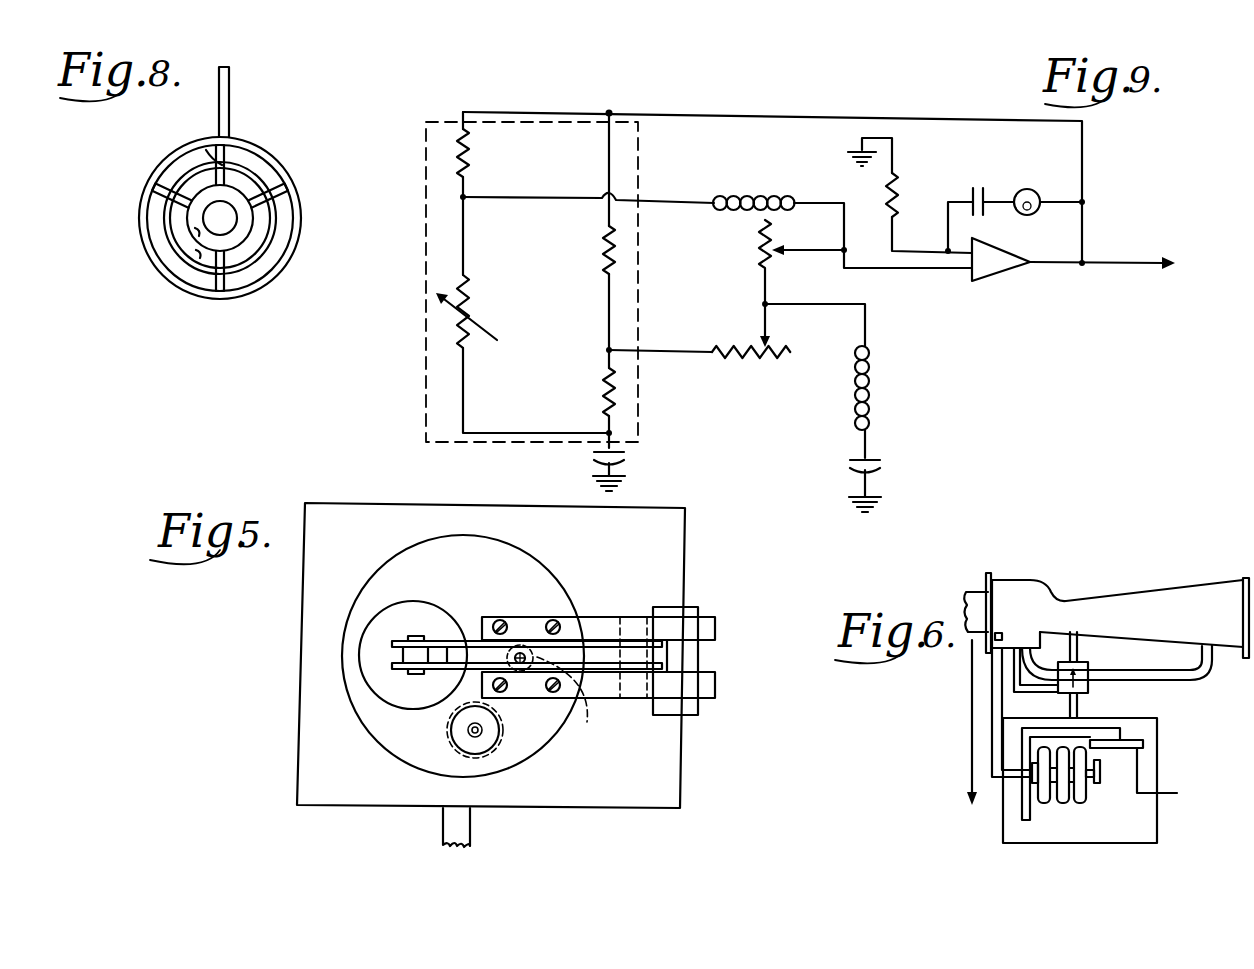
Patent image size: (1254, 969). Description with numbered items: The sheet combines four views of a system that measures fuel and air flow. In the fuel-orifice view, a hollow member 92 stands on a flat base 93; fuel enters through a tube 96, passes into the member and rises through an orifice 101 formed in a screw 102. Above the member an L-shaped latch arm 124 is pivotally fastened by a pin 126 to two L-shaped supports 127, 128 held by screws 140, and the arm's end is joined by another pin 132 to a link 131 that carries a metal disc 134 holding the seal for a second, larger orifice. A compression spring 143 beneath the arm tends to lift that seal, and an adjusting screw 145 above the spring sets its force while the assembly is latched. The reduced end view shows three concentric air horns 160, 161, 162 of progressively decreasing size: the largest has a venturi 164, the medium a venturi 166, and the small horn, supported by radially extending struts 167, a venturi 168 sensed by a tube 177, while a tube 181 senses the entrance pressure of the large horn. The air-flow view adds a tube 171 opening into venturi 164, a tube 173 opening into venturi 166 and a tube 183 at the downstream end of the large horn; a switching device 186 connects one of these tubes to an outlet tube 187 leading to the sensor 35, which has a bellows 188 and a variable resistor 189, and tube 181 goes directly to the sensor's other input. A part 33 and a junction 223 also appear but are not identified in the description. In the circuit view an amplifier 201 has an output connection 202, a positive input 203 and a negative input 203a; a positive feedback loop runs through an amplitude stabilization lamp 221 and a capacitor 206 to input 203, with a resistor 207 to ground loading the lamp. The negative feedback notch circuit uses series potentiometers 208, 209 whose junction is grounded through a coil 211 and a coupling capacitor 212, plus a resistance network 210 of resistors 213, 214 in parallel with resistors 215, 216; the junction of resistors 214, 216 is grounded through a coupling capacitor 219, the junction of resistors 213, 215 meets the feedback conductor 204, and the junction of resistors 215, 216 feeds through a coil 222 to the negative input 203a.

In FIG. 8, the largest air horn 160 is at (299, 196).
In FIG. 6, the largest air horn 160 is at (1173, 589).
In FIG. 8, the medium-size air horn 161 is at (249, 223).
In FIG. 8, the small-sized air horn 162 is at (245, 246).
In FIG. 8, the venturi 164 is at (196, 254).
In FIG. 8, the venturi 166 is at (195, 233).
In FIG. 8, the struts 167 is at (268, 180).
In FIG. 8, the venturi 168 is at (203, 218).
In FIG. 8, the tube 177 is at (212, 162).
In FIG. 6, the tube 177 is at (1014, 661).
In FIG. 8, the tube 181 is at (230, 86).
In FIG. 6, the tube 181 is at (992, 684).
In FIG. 9, the resistance network 210 is at (441, 122).
In FIG. 9, the junction 223 is at (613, 112).
In FIG. 9, the resistor 215 is at (472, 152).
In FIG. 9, the resistor 213 is at (603, 250).
In FIG. 9, the resistor 214 is at (601, 387).
In FIG. 9, the resistor 216 is at (472, 300).
In FIG. 9, the coupling capacitor 219 is at (626, 464).
In FIG. 9, the coil 222 is at (757, 195).
In FIG. 9, the potentiometer 208 is at (758, 246).
In FIG. 9, the potentiometer 209 is at (758, 356).
In FIG. 9, the coil 211 is at (871, 383).
In FIG. 9, the coupling capacitor 212 is at (878, 462).
In FIG. 9, the resistor 207 is at (901, 186).
In FIG. 9, the positive input 203 is at (906, 252).
In FIG. 9, the negative input 203a is at (912, 276).
In FIG. 9, the feedback conductor 204 is at (1001, 123).
In FIG. 9, the capacitor 206 is at (1000, 177).
In FIG. 9, the amplitude stabilization lamp 221 is at (1050, 178).
In FIG. 9, the amplifier 201 is at (1003, 271).
In FIG. 9, the output connection 202 is at (1122, 265).
In FIG. 5, the flat base 93 is at (667, 546).
In FIG. 5, the hollow member 92 is at (386, 559).
In FIG. 5, the metal disc 134 is at (397, 691).
In FIG. 5, the pin 126 is at (700, 660).
In FIG. 5, the pin 132 is at (418, 636).
In FIG. 5, the link 131 is at (434, 648).
In FIG. 5, the L-shaped support 128 is at (716, 630).
In FIG. 5, the L-shaped support 127 is at (716, 691).
In FIG. 5, the screws 140 is at (555, 622).
In FIG. 5, the latch arm 124 is at (608, 663).
In FIG. 5, the adjusting screw 145 is at (523, 669).
In FIG. 5, the compression spring 143 is at (581, 702).
In FIG. 5, the orifice 101 is at (476, 736).
In FIG. 5, the screw 102 is at (460, 738).
In FIG. 5, the tube 96 is at (474, 831).
In FIG. 6, the tube 173 is at (1045, 647).
In FIG. 6, the sensor 33 is at (1001, 633).
In FIG. 6, the tube 183 is at (1182, 668).
In FIG. 6, the switching device 186 is at (1090, 671).
In FIG. 6, the tube 171 is at (1079, 641).
In FIG. 6, the outlet tube 187 is at (1079, 707).
In FIG. 6, the sensor 35 is at (1157, 742).
In FIG. 6, the variable resistor 189 is at (1136, 740).
In FIG. 6, the bellows 188 is at (1061, 804).